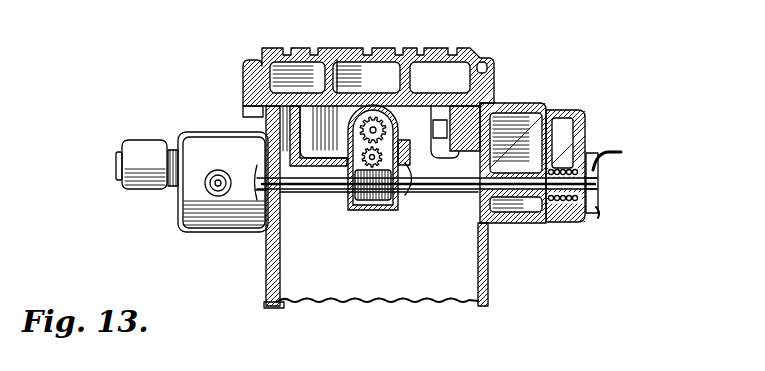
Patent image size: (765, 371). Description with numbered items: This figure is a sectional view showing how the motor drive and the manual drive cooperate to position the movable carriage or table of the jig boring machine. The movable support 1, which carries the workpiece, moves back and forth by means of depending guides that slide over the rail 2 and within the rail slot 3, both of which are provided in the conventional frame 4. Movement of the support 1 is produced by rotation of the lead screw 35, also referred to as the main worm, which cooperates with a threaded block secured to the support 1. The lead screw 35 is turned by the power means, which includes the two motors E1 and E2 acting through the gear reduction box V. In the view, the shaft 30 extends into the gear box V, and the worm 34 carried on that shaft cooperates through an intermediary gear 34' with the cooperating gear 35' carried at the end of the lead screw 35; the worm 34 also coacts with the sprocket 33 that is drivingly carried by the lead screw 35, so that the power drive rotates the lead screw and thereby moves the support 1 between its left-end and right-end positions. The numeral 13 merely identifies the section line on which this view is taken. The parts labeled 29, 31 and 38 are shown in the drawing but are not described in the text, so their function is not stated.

The movable support 1 is at (493, 80).
The rail 2 is at (285, 92).
The rail slot 3 is at (497, 103).
The frame 4 is at (265, 268).
The section line 13— 13 is at (432, 134).
The crank handle 29 is at (599, 167).
The shaft 30 is at (443, 193).
The spring 31 is at (554, 172).
The sprocket 33 is at (570, 204).
The worm 34 is at (367, 213).
The intermediary gear 34' is at (315, 140).
The lead screw 35 is at (369, 157).
The cooperating gear 35' is at (378, 68).
The bearing boss 38 is at (406, 167).
The motor E1 is at (150, 142).
The motor E2 is at (226, 169).
The gear reduction box V is at (225, 232).